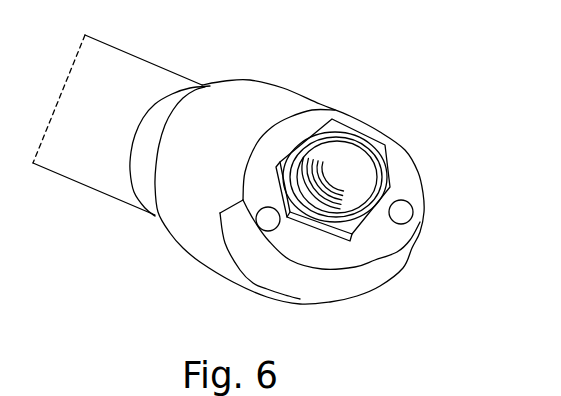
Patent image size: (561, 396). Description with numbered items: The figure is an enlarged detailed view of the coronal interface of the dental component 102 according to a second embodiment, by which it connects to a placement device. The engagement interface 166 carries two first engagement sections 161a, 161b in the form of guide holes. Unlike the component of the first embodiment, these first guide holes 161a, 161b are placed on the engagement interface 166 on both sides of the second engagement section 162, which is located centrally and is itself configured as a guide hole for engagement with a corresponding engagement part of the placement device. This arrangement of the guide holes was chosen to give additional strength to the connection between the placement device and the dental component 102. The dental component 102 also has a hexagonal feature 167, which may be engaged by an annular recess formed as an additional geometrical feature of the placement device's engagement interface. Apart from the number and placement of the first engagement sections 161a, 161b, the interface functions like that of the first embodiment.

The dental component 102 is at (314, 77).
The second engagement section 162 is at (362, 172).
The engagement interface 166 is at (430, 200).
The first engagement section 161a is at (402, 213).
The first engagement section 161b is at (268, 220).
The hexagonal feature 167 is at (315, 223).